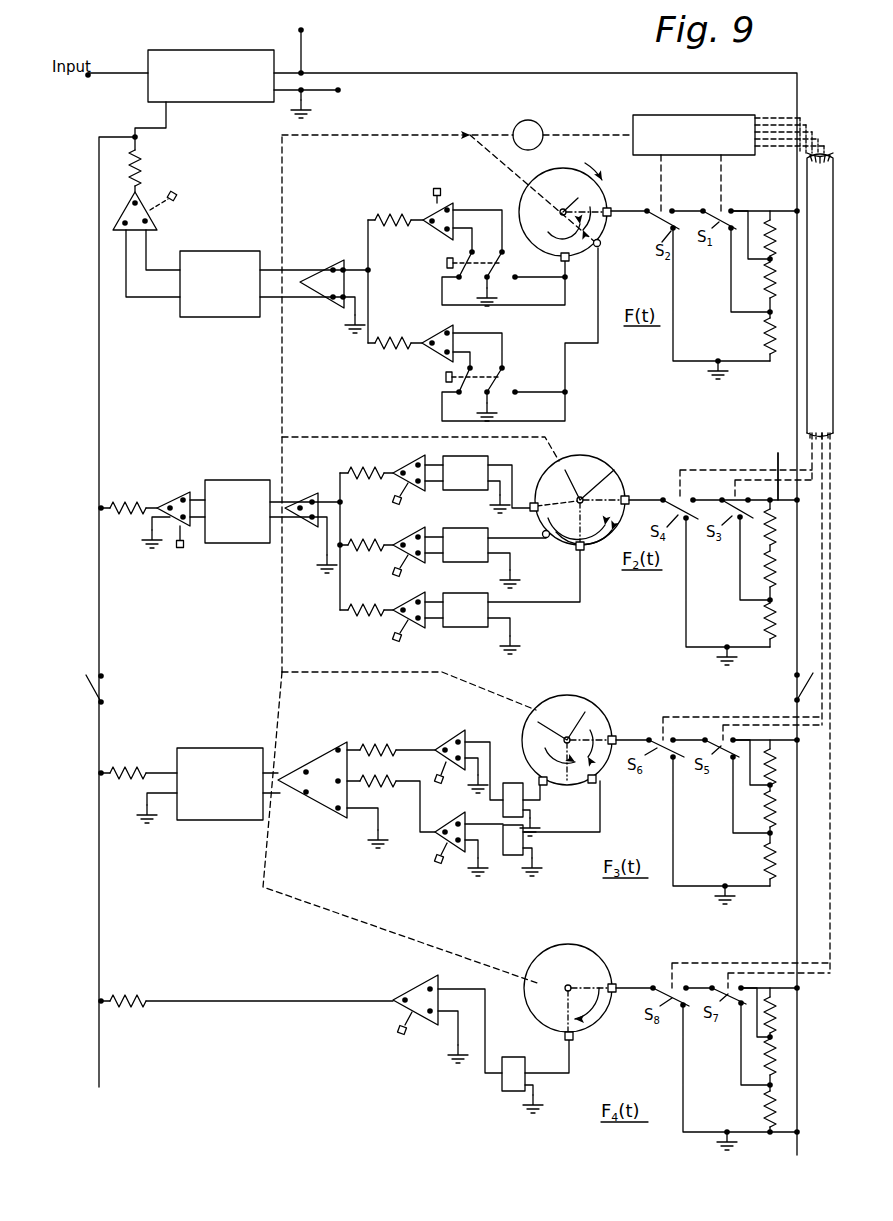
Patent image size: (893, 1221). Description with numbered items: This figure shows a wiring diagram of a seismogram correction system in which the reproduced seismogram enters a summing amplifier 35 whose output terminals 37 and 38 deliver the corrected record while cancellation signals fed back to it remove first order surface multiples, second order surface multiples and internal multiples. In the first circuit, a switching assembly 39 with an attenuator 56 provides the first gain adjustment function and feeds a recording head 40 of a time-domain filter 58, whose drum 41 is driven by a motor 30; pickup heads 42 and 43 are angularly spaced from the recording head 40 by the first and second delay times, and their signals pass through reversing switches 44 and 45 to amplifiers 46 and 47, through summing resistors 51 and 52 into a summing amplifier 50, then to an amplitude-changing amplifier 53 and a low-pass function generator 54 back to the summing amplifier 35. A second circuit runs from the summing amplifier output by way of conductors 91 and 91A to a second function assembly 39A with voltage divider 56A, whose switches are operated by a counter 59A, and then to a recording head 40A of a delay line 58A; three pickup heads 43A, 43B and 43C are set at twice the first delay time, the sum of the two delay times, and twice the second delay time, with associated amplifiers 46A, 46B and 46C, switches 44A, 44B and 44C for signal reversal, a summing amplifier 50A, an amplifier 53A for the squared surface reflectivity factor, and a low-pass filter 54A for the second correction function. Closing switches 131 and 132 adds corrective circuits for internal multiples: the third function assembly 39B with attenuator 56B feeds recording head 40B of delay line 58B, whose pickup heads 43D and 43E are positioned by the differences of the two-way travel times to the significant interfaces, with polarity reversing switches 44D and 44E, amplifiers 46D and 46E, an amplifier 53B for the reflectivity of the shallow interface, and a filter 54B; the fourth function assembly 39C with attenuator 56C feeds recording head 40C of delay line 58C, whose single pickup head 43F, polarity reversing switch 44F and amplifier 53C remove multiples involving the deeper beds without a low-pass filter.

The summing amplifier 35 is at (178, 50).
The output terminal 38 is at (305, 32).
The output terminal 37 is at (340, 90).
The conductor 91 is at (540, 73).
The motor 30 is at (527, 120).
The counter 59A is at (688, 115).
The time-domain filter 58 is at (522, 196).
The drum 41 is at (574, 172).
The recording head 40 is at (611, 208).
The pickup head 42 is at (604, 245).
The pickup head 43 is at (568, 262).
The summing resistor 52 is at (396, 212).
The amplifier 47 is at (433, 223).
The reversing switch 45 is at (434, 281).
The amplifier 46 is at (432, 331).
The reversing switch 44 is at (538, 385).
The summing resistor 51 is at (392, 352).
The summing amplifier 50 is at (340, 265).
The amplitude-changing amplifier 53 is at (158, 222).
The function generator 54 is at (205, 318).
The switching assembly 39 is at (713, 278).
The attenuator 56 is at (764, 331).
The time-domain filter 58A is at (605, 441).
The recording head 40A is at (628, 495).
The pickup head 43A is at (586, 552).
The pickup head 43B is at (546, 538).
The pickup head 43C is at (533, 512).
The switch 44A is at (462, 490).
The switch 44B is at (463, 562).
The switch 44C is at (470, 627).
The amplifier 46A is at (410, 464).
The amplifier 46B is at (411, 537).
The amplifier 46C is at (411, 602).
The amplifier 53A is at (186, 492).
The low-pass filter 54A is at (232, 543).
The summing amplifier 50A is at (312, 492).
The F2(t) function assembly 39A is at (733, 581).
The voltage divider 56A is at (764, 612).
The conductor 91A is at (766, 465).
The switch 132 is at (795, 691).
The switch 131 is at (92, 691).
The time-domain filter 58B is at (577, 680).
The recording head 40B is at (615, 735).
The pickup head 43D is at (599, 768).
The pickup head 43E is at (545, 788).
The polarity reversing switch 44D is at (513, 783).
The polarity reversing switch 44E is at (513, 856).
The amplifier 46D is at (450, 730).
The amplifier 46E is at (445, 839).
The amplifier 53B is at (316, 748).
The filter 54B is at (211, 748).
The F3(t) function assembly 39B is at (720, 819).
The attenuator 56B is at (763, 846).
The time-domain filter 58C is at (598, 1042).
The recording head 40C is at (617, 983).
The pickup head 43F is at (563, 1037).
The polarity reversing switch 44F is at (514, 1091).
The amplifier 53C is at (400, 990).
The F4(t) function assembly 39C is at (735, 1079).
The attenuator 56C is at (763, 1095).